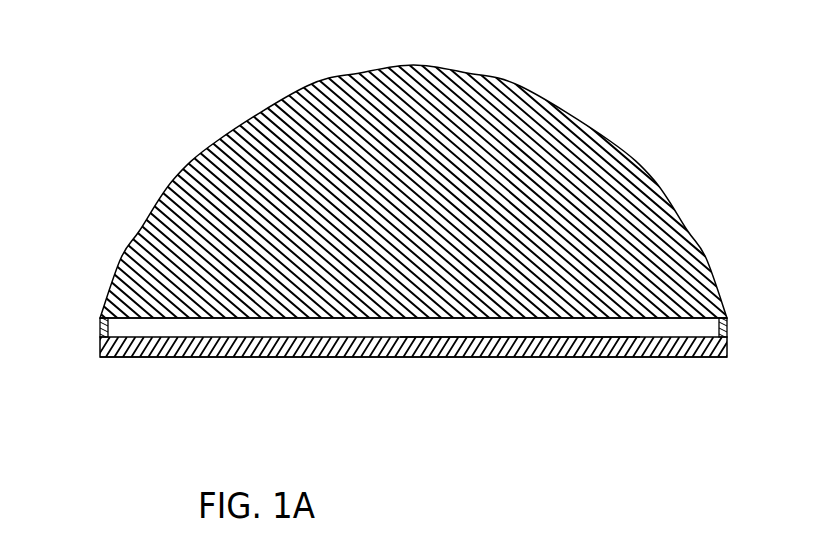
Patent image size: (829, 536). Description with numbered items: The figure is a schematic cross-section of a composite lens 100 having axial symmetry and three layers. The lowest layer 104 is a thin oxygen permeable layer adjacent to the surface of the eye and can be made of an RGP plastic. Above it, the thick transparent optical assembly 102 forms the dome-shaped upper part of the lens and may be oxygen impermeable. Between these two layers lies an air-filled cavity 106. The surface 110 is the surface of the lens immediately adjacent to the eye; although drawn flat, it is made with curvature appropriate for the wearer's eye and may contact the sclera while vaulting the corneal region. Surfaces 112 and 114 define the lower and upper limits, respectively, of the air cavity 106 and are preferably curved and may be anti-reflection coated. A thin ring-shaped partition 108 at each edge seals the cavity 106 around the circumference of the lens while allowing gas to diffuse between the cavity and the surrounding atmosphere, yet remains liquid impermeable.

The composite lens 100 is at (185, 107).
The thick transparent optical assembly 102 is at (535, 131).
The oxygen permeable layer 104 is at (627, 357).
The air-filled cavity 106 is at (240, 322).
The ring-shaped partition 108 is at (100, 323).
The surface 110 is at (429, 357).
The surface 112 is at (485, 342).
The surface 114 is at (593, 322).